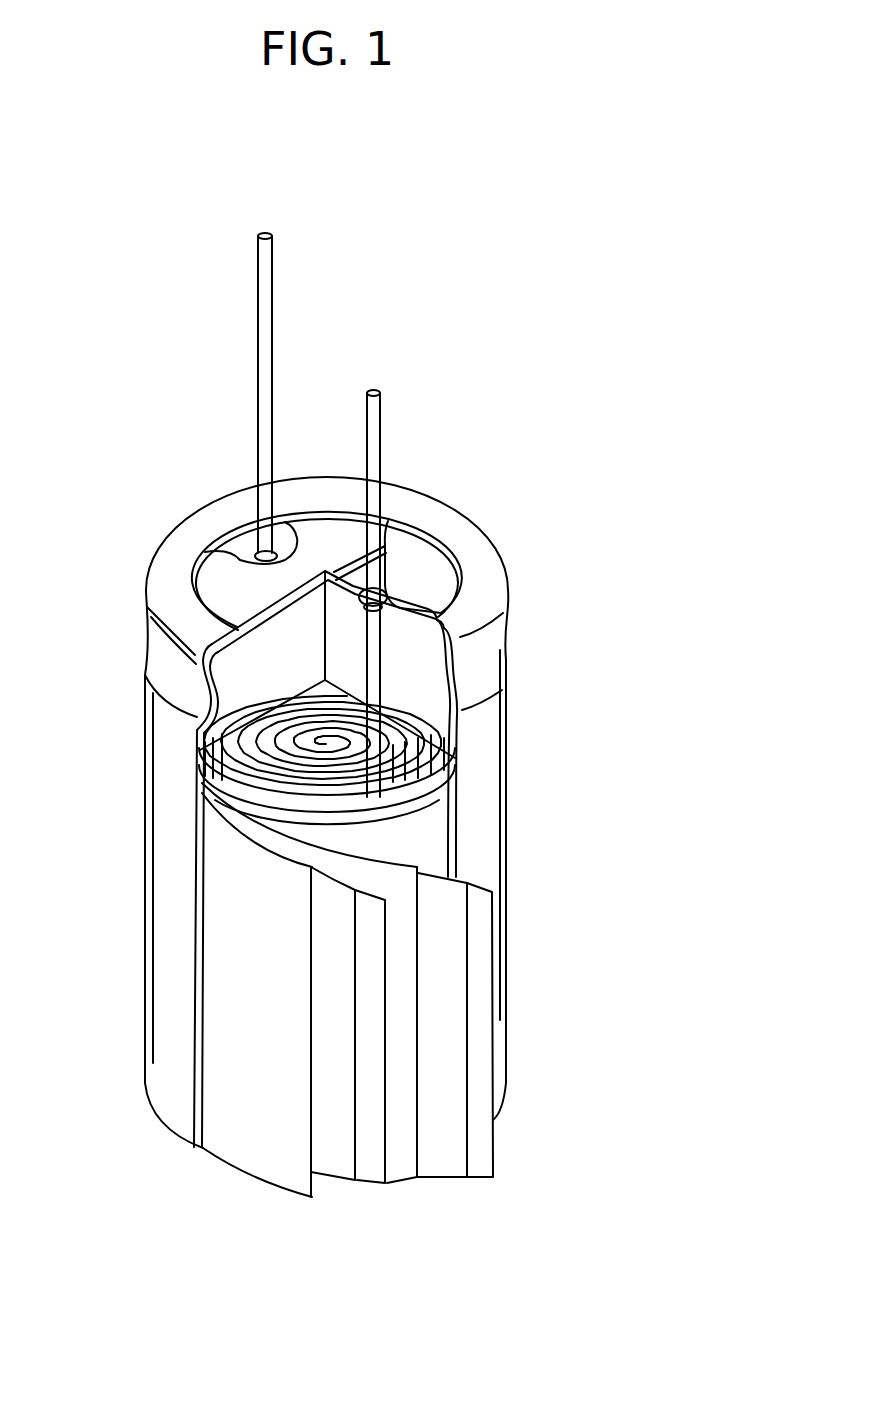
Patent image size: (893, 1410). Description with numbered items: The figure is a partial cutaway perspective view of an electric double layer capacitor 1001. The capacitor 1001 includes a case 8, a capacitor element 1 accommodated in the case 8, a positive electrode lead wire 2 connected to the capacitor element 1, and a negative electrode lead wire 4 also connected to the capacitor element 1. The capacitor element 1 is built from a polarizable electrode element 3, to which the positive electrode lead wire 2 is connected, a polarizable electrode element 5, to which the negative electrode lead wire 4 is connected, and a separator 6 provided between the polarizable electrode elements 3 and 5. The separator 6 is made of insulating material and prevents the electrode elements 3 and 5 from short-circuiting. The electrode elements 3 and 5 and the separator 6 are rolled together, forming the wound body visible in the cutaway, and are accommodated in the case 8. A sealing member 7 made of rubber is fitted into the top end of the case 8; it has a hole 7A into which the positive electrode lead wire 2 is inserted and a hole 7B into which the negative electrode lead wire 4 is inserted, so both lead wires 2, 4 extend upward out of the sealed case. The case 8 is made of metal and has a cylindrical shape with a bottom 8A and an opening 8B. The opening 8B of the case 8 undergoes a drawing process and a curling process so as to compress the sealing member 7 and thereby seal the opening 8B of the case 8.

The electric double layer capacitor 1001 is at (517, 373).
The capacitor element 1 is at (253, 760).
The positive electrode lead wire 2 is at (273, 317).
The polarizable electrode element 3 is at (443, 997).
The negative electrode lead wire 4 is at (381, 448).
The polarizable electrode element 5 is at (272, 1100).
The separator 6 is at (325, 1110).
The sealing member 7 is at (295, 636).
The hole 7A is at (257, 551).
The hole 7B is at (398, 658).
The case 8 is at (172, 912).
The bottom 8A is at (198, 1147).
The opening 8B is at (463, 708).